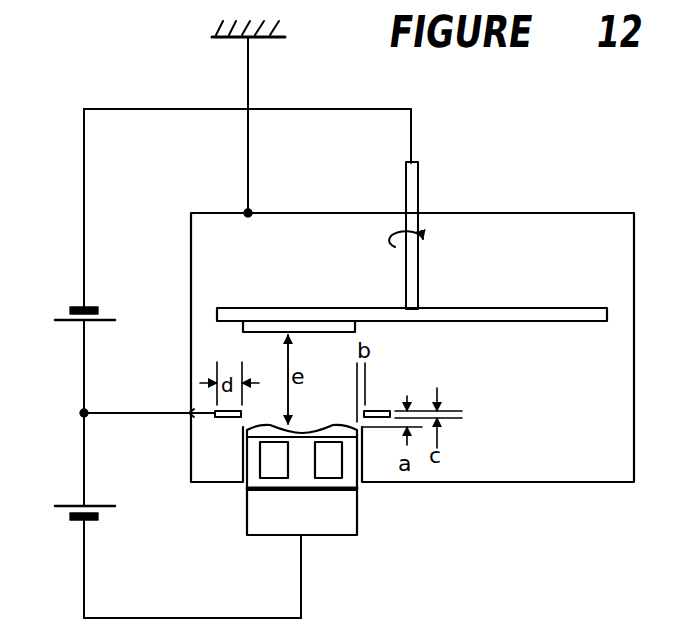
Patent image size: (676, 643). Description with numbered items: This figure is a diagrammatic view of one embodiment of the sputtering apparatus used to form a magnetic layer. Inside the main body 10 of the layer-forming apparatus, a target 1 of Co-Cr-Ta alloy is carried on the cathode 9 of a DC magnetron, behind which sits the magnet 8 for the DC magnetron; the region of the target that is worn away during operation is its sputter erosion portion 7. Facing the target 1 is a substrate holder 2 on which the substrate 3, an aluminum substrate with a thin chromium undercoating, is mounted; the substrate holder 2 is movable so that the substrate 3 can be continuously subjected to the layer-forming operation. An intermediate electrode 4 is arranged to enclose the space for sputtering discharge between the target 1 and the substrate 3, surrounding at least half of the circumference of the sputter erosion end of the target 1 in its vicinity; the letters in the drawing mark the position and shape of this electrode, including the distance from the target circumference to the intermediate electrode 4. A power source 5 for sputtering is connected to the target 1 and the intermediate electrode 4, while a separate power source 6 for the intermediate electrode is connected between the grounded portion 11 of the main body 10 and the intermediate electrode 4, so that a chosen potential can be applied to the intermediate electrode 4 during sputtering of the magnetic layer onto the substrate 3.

The target 1 is at (316, 425).
The substrate holder 2 is at (306, 308).
The substrate 3 is at (245, 330).
The intermediate electrode 4 is at (230, 418).
The power source for sputtering 5 is at (64, 518).
The power source for the intermediate electrode 6 is at (66, 310).
The sputter erosion portion 7 is at (270, 424).
The magnet for a DC magnetron 8 is at (336, 492).
The cathode of the DC magnetron 9 is at (340, 536).
The main body of the layer-forming apparatus 10 is at (535, 213).
The grounded portion of the main body 11 is at (283, 39).